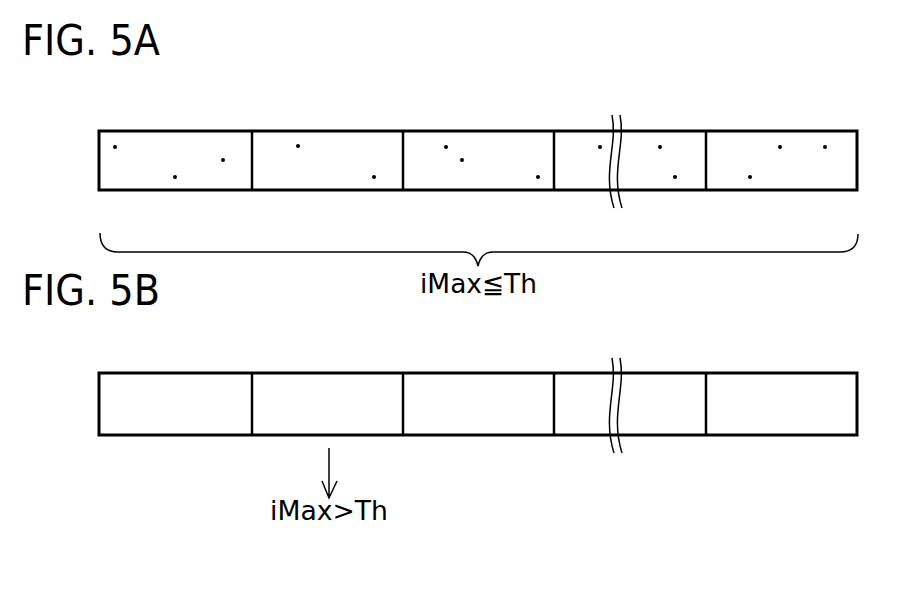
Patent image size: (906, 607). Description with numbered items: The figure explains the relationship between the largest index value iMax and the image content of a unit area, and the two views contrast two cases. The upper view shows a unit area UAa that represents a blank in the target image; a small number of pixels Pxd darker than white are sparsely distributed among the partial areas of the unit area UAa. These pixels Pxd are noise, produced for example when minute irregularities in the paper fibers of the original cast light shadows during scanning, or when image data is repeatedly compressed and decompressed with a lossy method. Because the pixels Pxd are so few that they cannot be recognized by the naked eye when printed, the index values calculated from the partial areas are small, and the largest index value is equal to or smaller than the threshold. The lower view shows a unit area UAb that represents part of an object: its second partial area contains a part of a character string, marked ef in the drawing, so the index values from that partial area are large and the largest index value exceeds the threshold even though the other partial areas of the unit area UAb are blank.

In FIG. 5A, the unit area UAa is at (71, 154).
In FIG. 5B, the unit area UAb is at (71, 397).
In FIG. 5A, the pixels darker than white Pxd is at (374, 177).
In FIG. 5B, the error flag ef is at (319, 451).